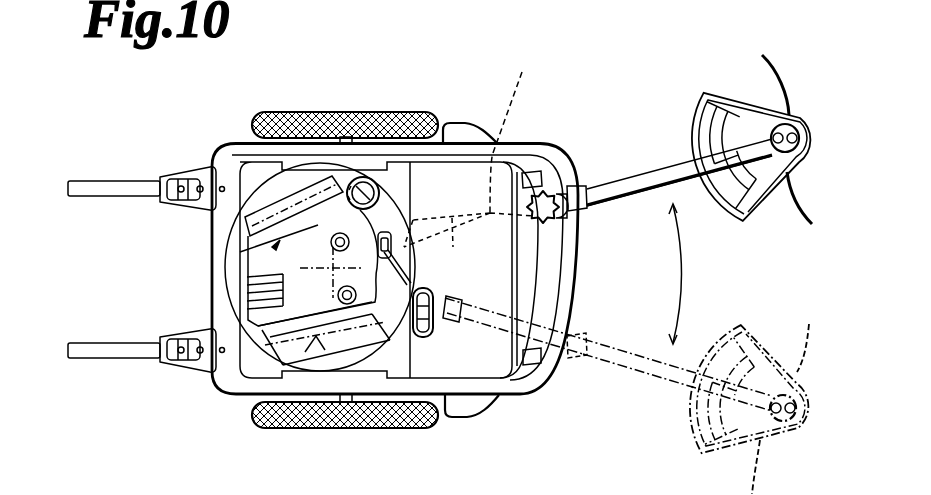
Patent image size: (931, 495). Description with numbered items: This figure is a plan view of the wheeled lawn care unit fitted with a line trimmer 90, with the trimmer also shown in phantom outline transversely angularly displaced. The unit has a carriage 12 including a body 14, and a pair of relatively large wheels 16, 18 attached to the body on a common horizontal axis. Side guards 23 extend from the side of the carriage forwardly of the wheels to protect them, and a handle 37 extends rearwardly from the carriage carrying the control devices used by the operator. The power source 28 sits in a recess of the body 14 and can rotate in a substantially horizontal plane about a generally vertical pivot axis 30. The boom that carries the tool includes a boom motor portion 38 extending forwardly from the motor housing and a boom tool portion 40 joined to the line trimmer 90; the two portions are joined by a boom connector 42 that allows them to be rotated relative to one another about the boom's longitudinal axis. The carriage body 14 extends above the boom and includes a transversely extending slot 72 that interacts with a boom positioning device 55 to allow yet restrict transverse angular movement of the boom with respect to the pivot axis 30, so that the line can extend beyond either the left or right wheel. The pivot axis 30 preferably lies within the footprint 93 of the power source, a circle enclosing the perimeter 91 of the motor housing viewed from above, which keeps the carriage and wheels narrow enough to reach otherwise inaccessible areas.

The carriage 12 is at (203, 391).
The body 14 is at (543, 372).
The wheel 16 is at (393, 430).
The wheel 18 is at (378, 112).
The side guard 23 is at (468, 123).
The power source 28 is at (292, 306).
The pivot axis 30 is at (295, 299).
The handle 37 is at (108, 180).
The boom motor portion 38 is at (472, 145).
The boom tool portion 40 is at (648, 163).
The boom connector 42 is at (579, 186).
The boom positioning device 55 is at (547, 187).
The transversely extending slot 72 is at (556, 362).
The line trimmer 90 is at (750, 214).
The perimeter 91 is at (268, 188).
The footprint 93 is at (250, 283).